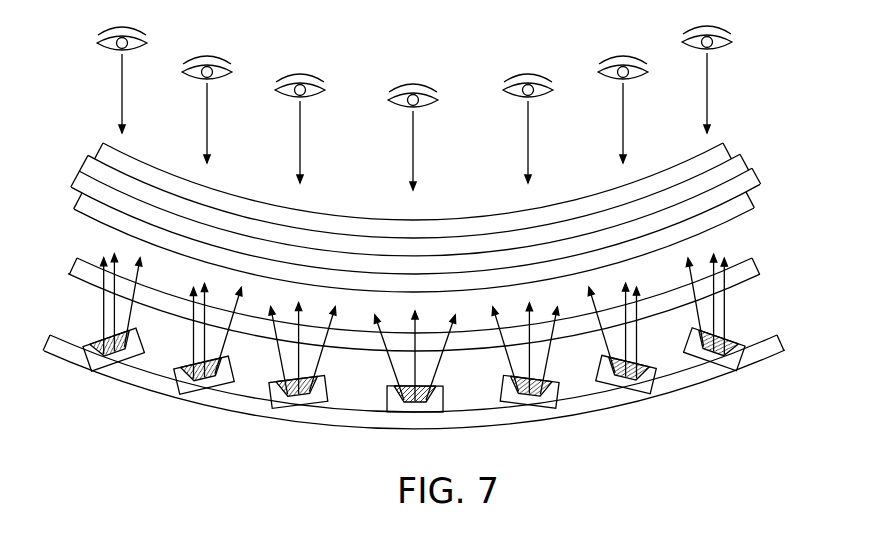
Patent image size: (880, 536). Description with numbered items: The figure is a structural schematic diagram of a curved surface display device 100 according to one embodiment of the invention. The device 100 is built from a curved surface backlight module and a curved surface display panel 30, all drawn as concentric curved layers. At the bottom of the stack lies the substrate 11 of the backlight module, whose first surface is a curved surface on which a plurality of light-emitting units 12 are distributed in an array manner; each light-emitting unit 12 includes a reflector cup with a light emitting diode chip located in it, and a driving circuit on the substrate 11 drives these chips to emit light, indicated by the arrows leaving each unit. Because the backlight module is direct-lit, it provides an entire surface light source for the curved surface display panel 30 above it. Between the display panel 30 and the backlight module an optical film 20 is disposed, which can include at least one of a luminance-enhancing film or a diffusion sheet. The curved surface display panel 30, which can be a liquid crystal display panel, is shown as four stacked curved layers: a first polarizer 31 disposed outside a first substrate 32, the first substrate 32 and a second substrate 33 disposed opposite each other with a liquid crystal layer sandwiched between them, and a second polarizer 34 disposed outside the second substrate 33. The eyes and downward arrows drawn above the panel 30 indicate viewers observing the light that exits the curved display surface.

The curved surface display device 100 is at (71, 132).
The substrate 11 is at (778, 340).
The light-emitting units 12 is at (741, 327).
The optical film 20 is at (753, 262).
The curved surface display panel 30 is at (832, 105).
The first polarizer 31 is at (750, 197).
The first substrate 32 is at (749, 178).
The second substrate 33 is at (739, 159).
The second polarizer 34 is at (731, 145).